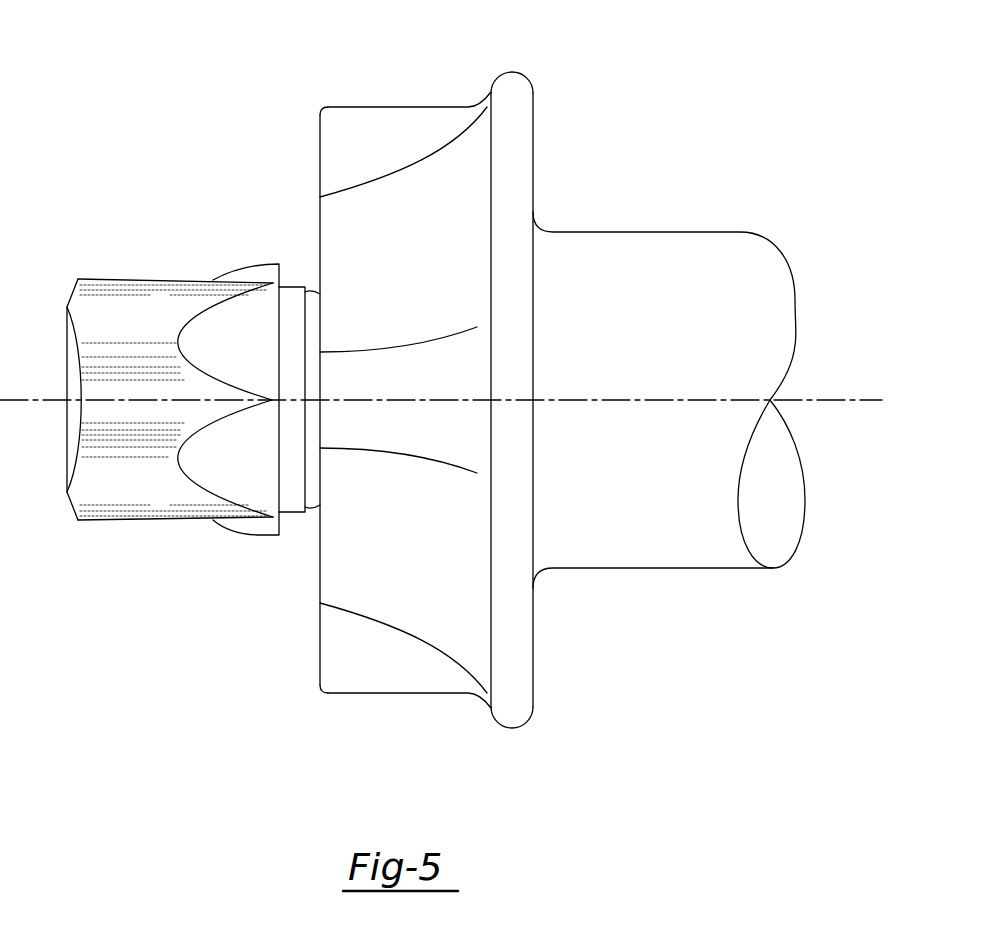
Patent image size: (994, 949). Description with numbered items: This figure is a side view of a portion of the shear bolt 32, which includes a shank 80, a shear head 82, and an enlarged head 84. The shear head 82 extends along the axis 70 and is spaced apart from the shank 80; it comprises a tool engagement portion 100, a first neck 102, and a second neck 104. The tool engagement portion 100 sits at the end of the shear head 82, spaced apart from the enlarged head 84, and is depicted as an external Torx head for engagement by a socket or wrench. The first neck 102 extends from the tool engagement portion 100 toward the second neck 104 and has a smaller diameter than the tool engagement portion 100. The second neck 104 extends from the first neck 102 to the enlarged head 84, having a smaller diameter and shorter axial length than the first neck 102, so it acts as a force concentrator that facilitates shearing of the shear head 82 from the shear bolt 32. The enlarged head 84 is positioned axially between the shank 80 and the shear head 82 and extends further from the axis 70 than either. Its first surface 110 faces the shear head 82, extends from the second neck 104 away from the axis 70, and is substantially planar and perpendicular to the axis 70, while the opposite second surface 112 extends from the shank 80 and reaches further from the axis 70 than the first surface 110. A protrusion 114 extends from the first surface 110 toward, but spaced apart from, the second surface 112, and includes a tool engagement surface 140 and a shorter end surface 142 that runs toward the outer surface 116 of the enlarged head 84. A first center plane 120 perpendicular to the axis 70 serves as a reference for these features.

The shear bolt 32 is at (188, 345).
The axis 70 is at (445, 484).
The shank 80 is at (445, 375).
The shear head 82 is at (67, 310).
The enlarged head 84 is at (563, 364).
The tool engagement portion 100 is at (167, 375).
The first neck 102 is at (292, 287).
The second neck 104 is at (315, 292).
The first surface 110 is at (370, 399).
The second surface 112 is at (533, 128).
The protrusion 114 is at (320, 108).
The outer surface 116 is at (410, 391).
The first center plane 120 is at (800, 400).
The tool engagement surface 140 is at (410, 107).
The end surface 142 is at (353, 578).